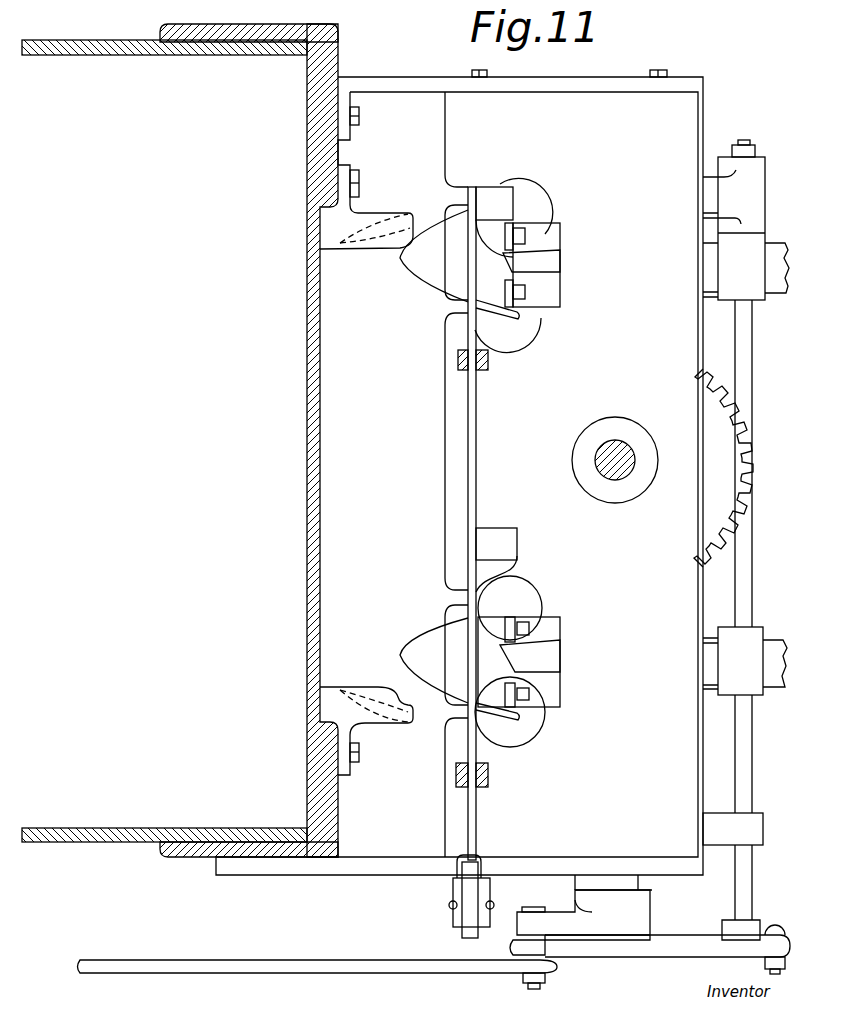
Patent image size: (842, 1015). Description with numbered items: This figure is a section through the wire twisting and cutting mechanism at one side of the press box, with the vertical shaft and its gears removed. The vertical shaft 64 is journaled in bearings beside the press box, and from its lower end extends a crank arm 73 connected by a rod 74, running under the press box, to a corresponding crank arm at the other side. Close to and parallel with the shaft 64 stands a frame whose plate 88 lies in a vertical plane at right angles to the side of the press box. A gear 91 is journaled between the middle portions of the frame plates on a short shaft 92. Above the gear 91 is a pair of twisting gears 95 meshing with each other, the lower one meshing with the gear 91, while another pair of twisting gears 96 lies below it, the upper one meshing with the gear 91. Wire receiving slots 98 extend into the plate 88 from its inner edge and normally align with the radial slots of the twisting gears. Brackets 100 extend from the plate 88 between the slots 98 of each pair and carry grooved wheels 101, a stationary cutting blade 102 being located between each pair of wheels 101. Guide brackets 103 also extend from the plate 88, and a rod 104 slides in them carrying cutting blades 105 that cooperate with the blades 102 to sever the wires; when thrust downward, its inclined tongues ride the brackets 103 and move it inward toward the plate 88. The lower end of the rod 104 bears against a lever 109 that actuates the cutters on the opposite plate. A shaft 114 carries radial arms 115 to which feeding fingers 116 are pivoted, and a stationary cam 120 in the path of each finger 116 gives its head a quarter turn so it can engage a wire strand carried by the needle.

The vertical shaft 64 is at (640, 882).
The crank arm 73 is at (610, 923).
The rod 74 is at (400, 967).
The plate 88 is at (459, 472).
The gear 91 is at (727, 467).
The short shaft 92 is at (632, 448).
The twisting gears 95 is at (538, 208).
The twisting gears 96 is at (542, 602).
The wire receiving slots 98 is at (470, 188).
The brackets 100 is at (515, 237).
The grooved wheels 101 is at (526, 298).
The stationary cutting blade 102 is at (525, 260).
The guide brackets 103 is at (482, 372).
The rod 104 is at (472, 463).
The cutting blades 105 is at (502, 195).
The lever 109 is at (468, 910).
The shaft 114 is at (745, 758).
The radial arms 115 is at (773, 683).
The feeding fingers 116 is at (402, 653).
The stationary cam 120 is at (360, 248).